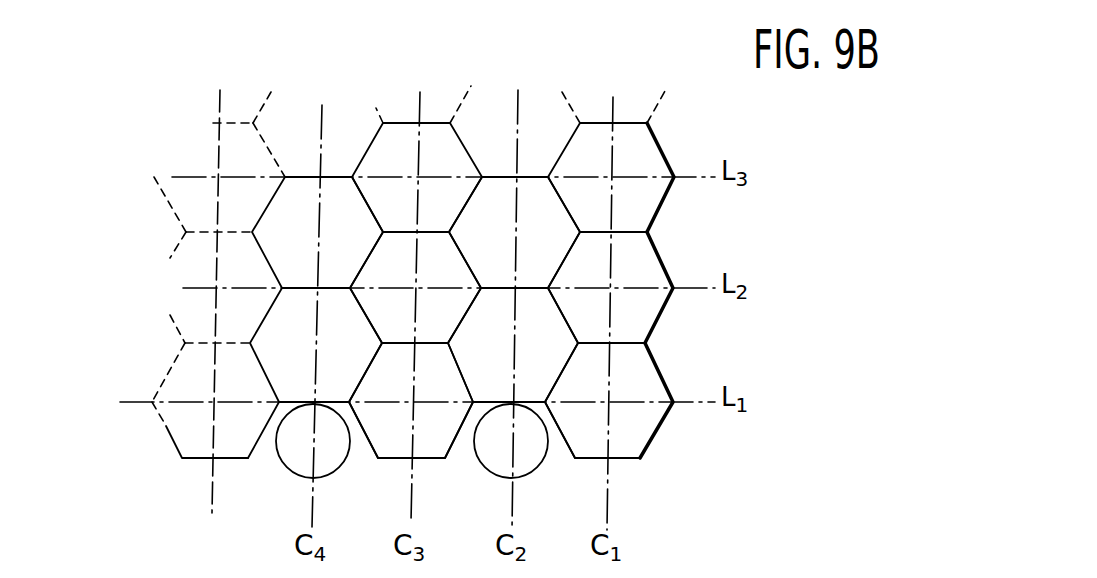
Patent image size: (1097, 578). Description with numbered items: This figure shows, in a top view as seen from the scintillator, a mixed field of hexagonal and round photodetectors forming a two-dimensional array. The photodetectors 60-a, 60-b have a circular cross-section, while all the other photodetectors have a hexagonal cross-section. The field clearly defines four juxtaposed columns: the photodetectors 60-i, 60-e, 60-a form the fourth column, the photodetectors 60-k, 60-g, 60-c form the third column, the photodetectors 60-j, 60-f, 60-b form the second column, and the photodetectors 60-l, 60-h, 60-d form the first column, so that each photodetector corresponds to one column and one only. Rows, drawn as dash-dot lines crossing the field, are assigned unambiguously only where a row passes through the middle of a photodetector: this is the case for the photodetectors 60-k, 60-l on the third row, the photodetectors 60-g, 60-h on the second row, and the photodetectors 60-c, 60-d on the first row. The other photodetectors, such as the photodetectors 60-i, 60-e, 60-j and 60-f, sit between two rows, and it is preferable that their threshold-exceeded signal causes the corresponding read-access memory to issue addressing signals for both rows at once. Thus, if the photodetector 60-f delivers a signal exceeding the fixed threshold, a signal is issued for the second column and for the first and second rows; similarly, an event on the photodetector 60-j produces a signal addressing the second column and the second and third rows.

The photodetector 60-a is at (295, 447).
The photodetector 60-b is at (490, 458).
The photodetector 60-c is at (392, 438).
The photodetector 60-d is at (637, 426).
The photodetector 60-e is at (288, 325).
The photodetector 60-f is at (545, 350).
The photodetector 60-g is at (377, 278).
The photodetector 60-h is at (639, 267).
The photodetector 60-i is at (278, 226).
The photodetector 60-j is at (491, 200).
The photodetector 60-k is at (381, 158).
The photodetector 60-l is at (646, 158).